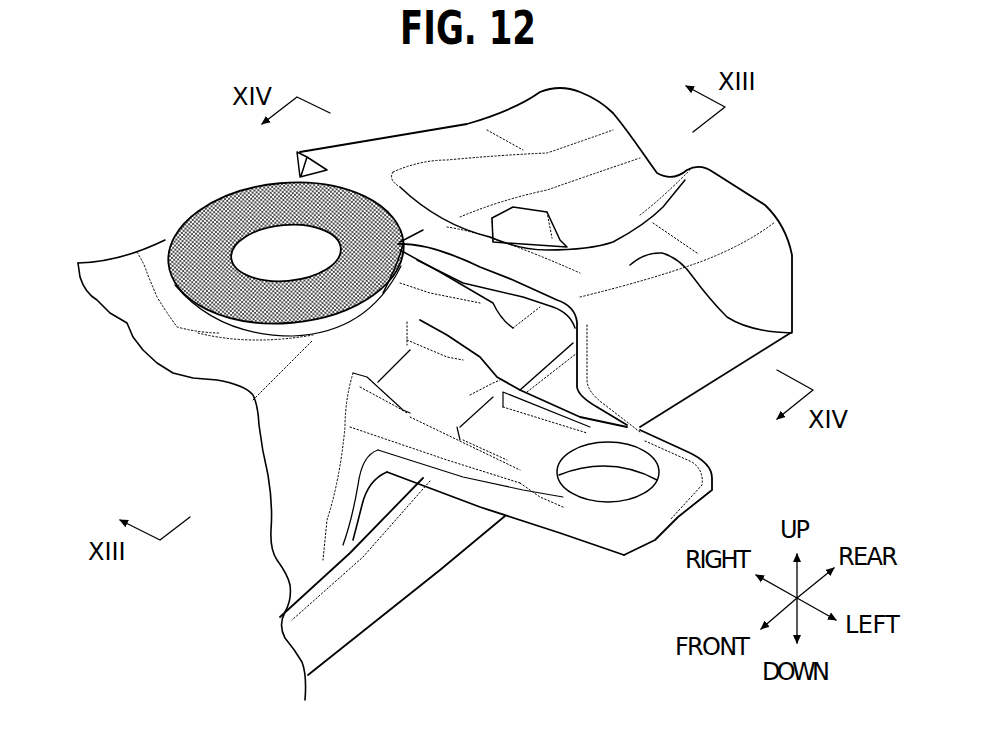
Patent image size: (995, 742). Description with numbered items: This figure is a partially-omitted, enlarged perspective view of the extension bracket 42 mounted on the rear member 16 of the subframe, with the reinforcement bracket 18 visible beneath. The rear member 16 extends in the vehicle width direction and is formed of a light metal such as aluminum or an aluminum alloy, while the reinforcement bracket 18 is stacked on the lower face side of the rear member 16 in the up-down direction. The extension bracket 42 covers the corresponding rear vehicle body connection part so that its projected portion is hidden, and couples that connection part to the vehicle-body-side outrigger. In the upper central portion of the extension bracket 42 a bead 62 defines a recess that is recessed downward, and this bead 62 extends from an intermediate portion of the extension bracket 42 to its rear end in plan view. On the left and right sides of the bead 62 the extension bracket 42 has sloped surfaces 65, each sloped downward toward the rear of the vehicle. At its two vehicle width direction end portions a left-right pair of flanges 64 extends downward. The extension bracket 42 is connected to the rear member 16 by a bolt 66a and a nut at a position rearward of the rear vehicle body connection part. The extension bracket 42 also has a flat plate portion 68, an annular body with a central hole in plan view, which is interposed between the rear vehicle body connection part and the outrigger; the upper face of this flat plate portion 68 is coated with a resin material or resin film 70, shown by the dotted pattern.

The rear member 16 is at (115, 283).
The reinforcement bracket 18 is at (383, 573).
The extension bracket 42 is at (770, 181).
The bead 62 is at (587, 213).
The flange 64 is at (298, 172).
The sloped surface 65 is at (403, 140).
The bolt 66a is at (518, 227).
The flat plate portion 68 is at (197, 307).
The resin film 70 is at (200, 232).